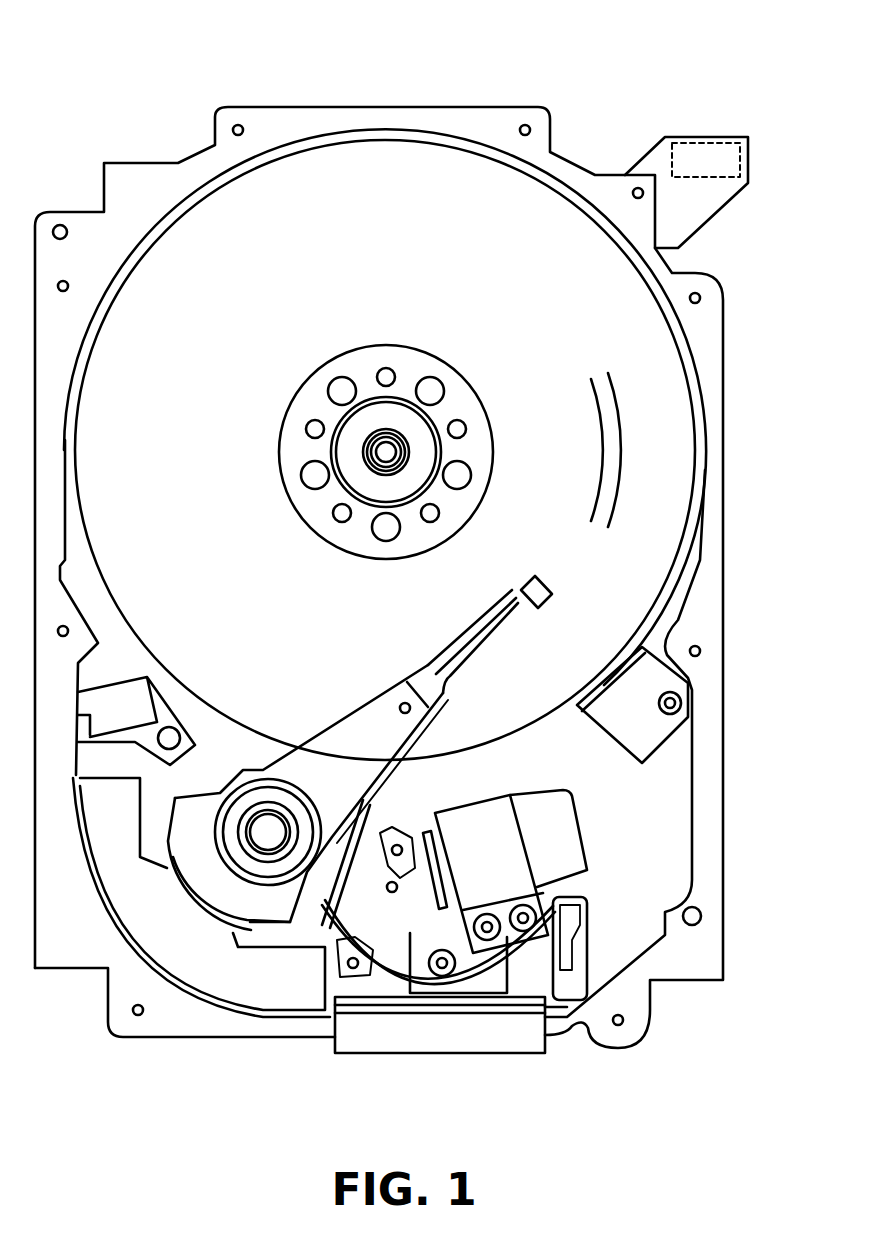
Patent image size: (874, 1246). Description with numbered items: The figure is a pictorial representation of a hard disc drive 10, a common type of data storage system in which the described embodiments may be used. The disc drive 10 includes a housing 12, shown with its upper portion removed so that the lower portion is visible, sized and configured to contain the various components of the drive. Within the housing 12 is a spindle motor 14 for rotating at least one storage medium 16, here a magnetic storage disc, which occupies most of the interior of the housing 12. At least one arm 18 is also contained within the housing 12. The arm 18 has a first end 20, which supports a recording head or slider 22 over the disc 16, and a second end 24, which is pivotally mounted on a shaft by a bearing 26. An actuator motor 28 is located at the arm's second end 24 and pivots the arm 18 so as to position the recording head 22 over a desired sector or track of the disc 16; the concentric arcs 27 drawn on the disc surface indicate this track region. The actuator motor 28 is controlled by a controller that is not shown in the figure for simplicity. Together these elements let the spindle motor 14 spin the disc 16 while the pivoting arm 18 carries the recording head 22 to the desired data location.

The hard disc drive 10 is at (146, 118).
The housing 12 is at (497, 107).
The spindle motor 14 is at (386, 452).
The storage medium 16 is at (380, 267).
The arm 18 is at (381, 713).
The first end 20 is at (463, 632).
The recording head 22 is at (536, 578).
The second end 24 is at (288, 772).
The bearing 26 is at (265, 835).
The data tracks 27 is at (625, 448).
The actuator motor 28 is at (138, 893).